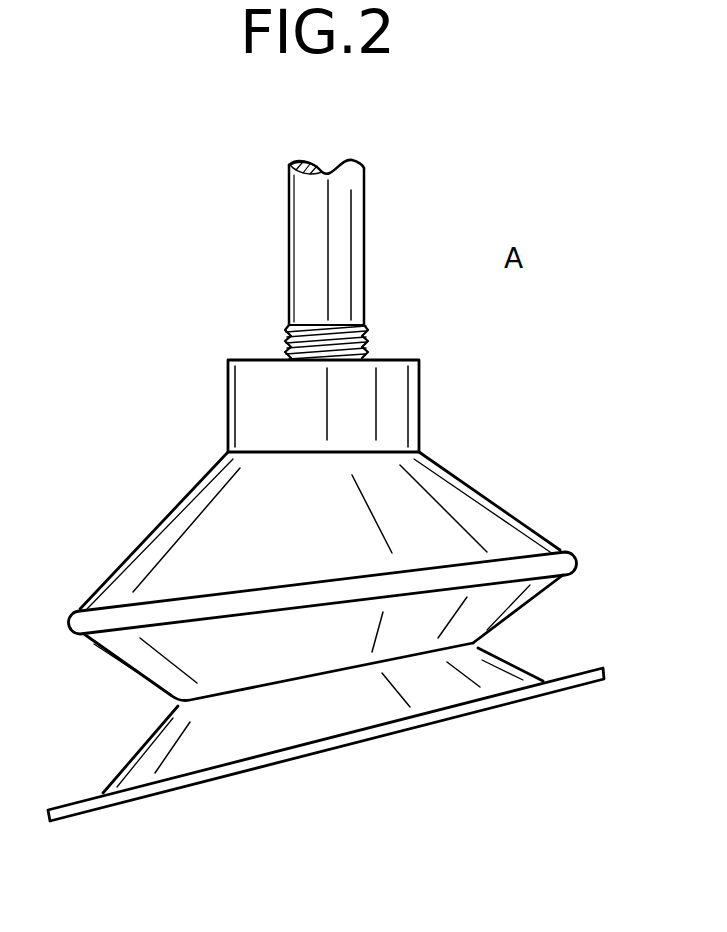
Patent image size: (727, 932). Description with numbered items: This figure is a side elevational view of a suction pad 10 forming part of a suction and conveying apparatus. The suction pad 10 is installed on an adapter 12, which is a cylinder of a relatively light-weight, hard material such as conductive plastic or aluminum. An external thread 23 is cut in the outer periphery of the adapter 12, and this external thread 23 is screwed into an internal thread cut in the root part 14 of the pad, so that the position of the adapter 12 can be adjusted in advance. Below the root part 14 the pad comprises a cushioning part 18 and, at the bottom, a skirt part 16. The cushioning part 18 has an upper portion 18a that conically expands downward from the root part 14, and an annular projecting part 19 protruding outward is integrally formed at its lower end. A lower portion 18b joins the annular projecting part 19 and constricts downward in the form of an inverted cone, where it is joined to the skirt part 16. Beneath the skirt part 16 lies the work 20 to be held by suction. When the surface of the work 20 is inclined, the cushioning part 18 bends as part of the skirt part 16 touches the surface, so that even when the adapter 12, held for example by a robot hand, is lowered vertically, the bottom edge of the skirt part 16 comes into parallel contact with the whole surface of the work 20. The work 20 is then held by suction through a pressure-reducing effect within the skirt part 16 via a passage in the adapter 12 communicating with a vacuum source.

The suction pad 10 is at (170, 452).
The adapter 12 is at (345, 221).
The external thread 23 is at (370, 346).
The root part 14 is at (397, 382).
The cushioning part 18 is at (450, 493).
The upper portion of the cushioning part 18a is at (150, 565).
The lower portion of the cushioning part 18b is at (138, 672).
The annular projecting part 19 is at (578, 556).
The skirt part 16 is at (153, 758).
The work 20 is at (603, 668).